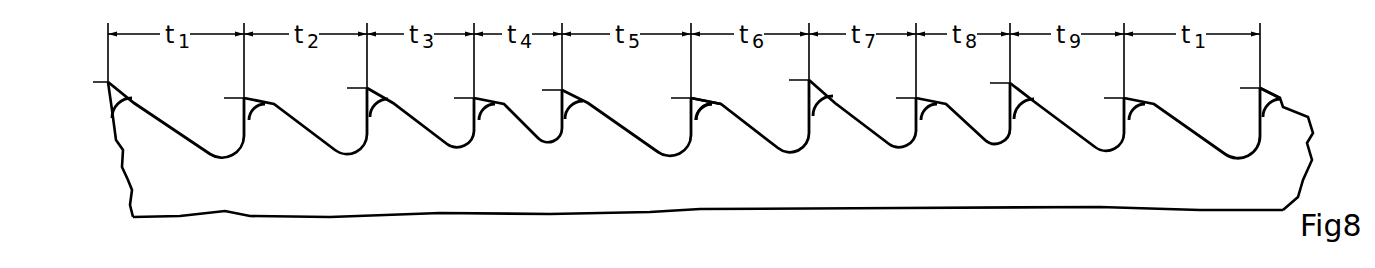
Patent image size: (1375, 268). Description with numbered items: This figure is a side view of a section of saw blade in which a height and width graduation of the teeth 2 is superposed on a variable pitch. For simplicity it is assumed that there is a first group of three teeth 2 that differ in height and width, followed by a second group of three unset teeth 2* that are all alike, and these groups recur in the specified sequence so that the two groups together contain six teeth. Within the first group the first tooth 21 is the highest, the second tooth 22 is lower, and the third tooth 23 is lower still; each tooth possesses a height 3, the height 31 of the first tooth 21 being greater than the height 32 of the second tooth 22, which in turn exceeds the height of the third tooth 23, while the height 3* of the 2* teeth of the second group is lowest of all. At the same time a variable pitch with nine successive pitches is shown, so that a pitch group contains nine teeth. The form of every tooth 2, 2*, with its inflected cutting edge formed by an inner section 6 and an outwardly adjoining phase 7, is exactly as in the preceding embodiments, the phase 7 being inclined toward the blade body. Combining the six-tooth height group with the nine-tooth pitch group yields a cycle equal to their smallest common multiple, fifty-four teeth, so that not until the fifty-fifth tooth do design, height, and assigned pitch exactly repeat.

The tooth 2 is at (1137, 233).
The first tooth of the first group 21 is at (829, 233).
The second tooth of the first group 22 is at (1037, 233).
The third tooth of the first group 23 is at (1267, 233).
The height 3 is at (905, 207).
The height of the first tooth 31 is at (795, 207).
The height of the second tooth 32 is at (997, 207).
The inner section 6 is at (690, 97).
The phase 7 is at (692, 109).